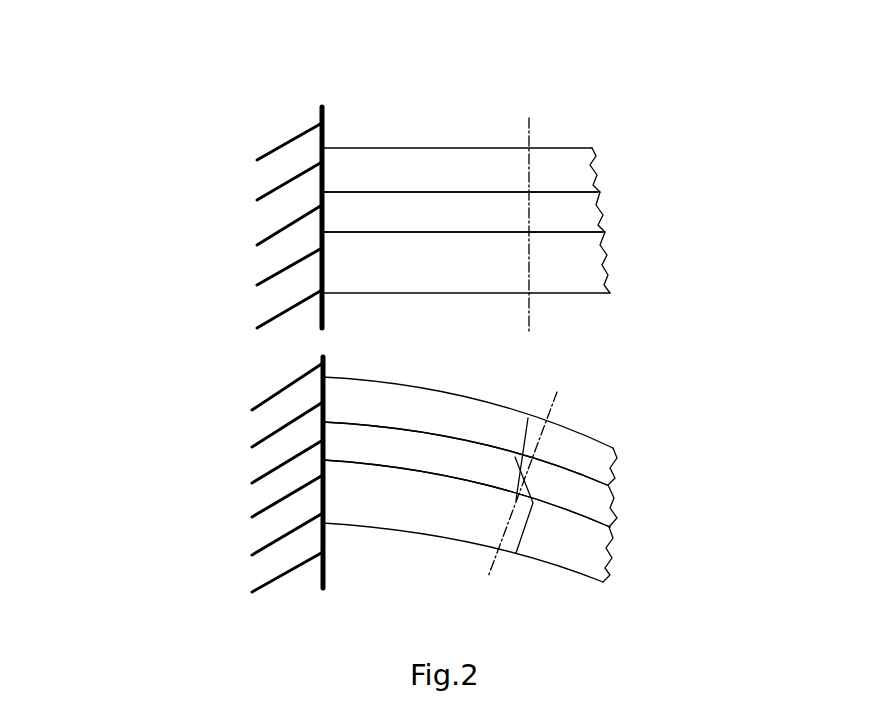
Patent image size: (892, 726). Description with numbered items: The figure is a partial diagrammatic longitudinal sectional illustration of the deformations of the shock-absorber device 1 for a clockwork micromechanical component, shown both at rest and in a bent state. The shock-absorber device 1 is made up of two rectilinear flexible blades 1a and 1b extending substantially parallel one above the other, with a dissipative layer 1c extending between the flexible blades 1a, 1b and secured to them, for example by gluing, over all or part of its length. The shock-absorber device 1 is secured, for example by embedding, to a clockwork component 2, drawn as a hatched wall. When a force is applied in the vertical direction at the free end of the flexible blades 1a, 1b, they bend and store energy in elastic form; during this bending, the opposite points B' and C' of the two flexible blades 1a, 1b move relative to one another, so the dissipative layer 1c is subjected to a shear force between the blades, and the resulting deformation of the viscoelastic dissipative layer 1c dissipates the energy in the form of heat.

The shock-absorber device 1 is at (534, 313).
The flexible blade 1a is at (583, 168).
The flexible blade 1b is at (577, 268).
The dissipative layer 1c is at (578, 215).
The clockwork component 2 is at (298, 207).